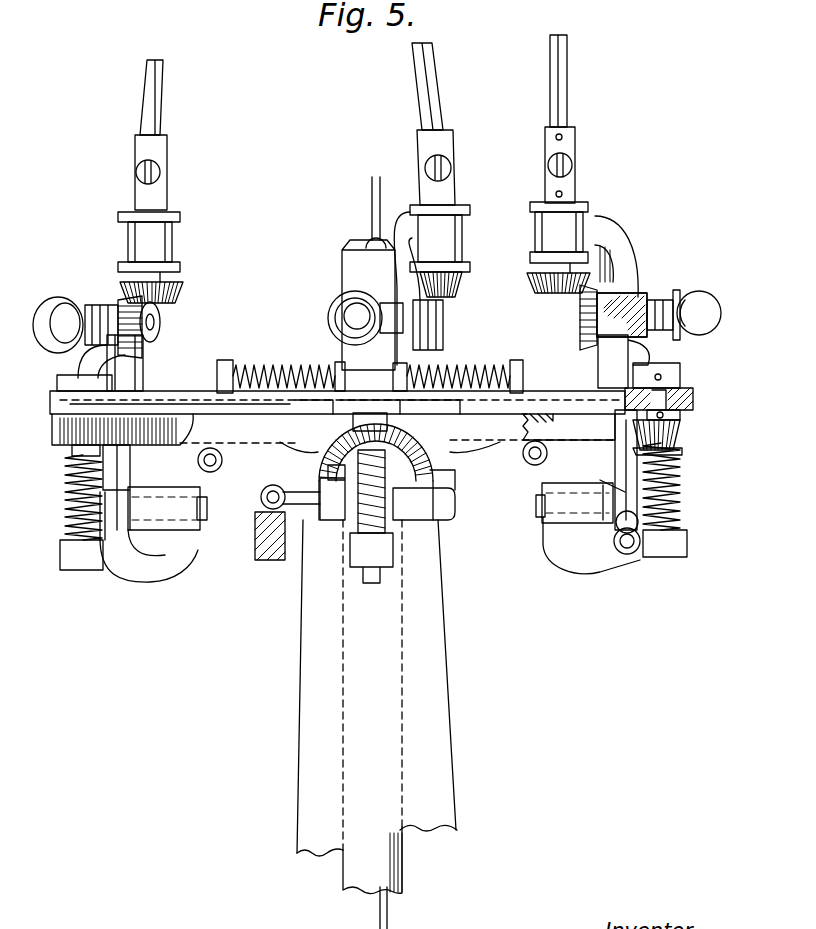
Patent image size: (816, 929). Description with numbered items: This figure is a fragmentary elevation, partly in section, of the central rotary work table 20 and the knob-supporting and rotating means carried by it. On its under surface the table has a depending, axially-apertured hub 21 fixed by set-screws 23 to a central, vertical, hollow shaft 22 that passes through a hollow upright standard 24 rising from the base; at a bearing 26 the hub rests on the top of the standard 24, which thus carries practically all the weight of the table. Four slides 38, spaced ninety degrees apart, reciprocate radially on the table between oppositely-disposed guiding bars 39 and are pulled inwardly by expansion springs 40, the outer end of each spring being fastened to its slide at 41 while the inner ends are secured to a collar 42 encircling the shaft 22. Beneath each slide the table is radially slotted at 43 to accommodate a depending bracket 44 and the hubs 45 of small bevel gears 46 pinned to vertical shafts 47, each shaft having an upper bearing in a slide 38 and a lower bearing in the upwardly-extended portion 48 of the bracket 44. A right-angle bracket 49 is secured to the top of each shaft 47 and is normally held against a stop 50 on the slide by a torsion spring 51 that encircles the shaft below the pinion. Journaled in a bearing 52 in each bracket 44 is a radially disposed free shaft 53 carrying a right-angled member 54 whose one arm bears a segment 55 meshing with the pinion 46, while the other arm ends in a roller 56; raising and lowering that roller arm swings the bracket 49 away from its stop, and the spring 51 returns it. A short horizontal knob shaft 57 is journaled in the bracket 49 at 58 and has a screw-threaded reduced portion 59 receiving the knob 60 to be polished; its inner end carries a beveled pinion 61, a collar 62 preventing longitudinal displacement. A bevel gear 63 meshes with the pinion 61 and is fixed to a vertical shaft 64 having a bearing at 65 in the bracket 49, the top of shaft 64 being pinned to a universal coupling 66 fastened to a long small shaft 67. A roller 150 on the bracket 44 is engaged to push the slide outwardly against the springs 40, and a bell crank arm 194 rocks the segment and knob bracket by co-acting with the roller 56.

The rotary work table 20 is at (337, 422).
The hub 21 is at (330, 458).
The hollow shaft 22 is at (345, 250).
The set-screws 23 is at (320, 474).
The hollow upright standard 24 is at (447, 640).
The bearing 26 is at (440, 490).
The slides 38 is at (578, 392).
The guiding bars 39 is at (162, 388).
The expansion springs 40 is at (255, 367).
The spring fastening point 41 is at (225, 360).
The collar 42 is at (336, 366).
The radial slot 43 is at (683, 416).
The bracket 44 is at (370, 485).
The hubs 45 is at (682, 436).
The bevel gears 46 is at (682, 447).
The vertical shafts 47 is at (68, 468).
The upwardly-extended portion 48 is at (372, 583).
The right-angle bracket 49 is at (640, 275).
The stop 50 is at (598, 362).
The torsion spring 51 is at (68, 510).
The bearing 52 is at (165, 541).
The free shaft 53 is at (216, 504).
The right-angled member 54 is at (118, 555).
The segment 55 is at (126, 466).
The roller 56 is at (262, 506).
The knob shaft 57 is at (160, 322).
The bearing 58 is at (626, 305).
The screw-threaded reduced portion 59 is at (681, 301).
The knob 60 is at (38, 308).
The beveled pinion 61 is at (150, 351).
The collar 62 is at (96, 306).
The bevel gear 63 is at (184, 292).
The vertical shaft 64 is at (542, 232).
The bearing 65 is at (172, 237).
The universal coupling 66 is at (167, 177).
The long small shaft 67 is at (163, 92).
The roller 150 is at (223, 460).
The bell crank arm 194 is at (278, 560).